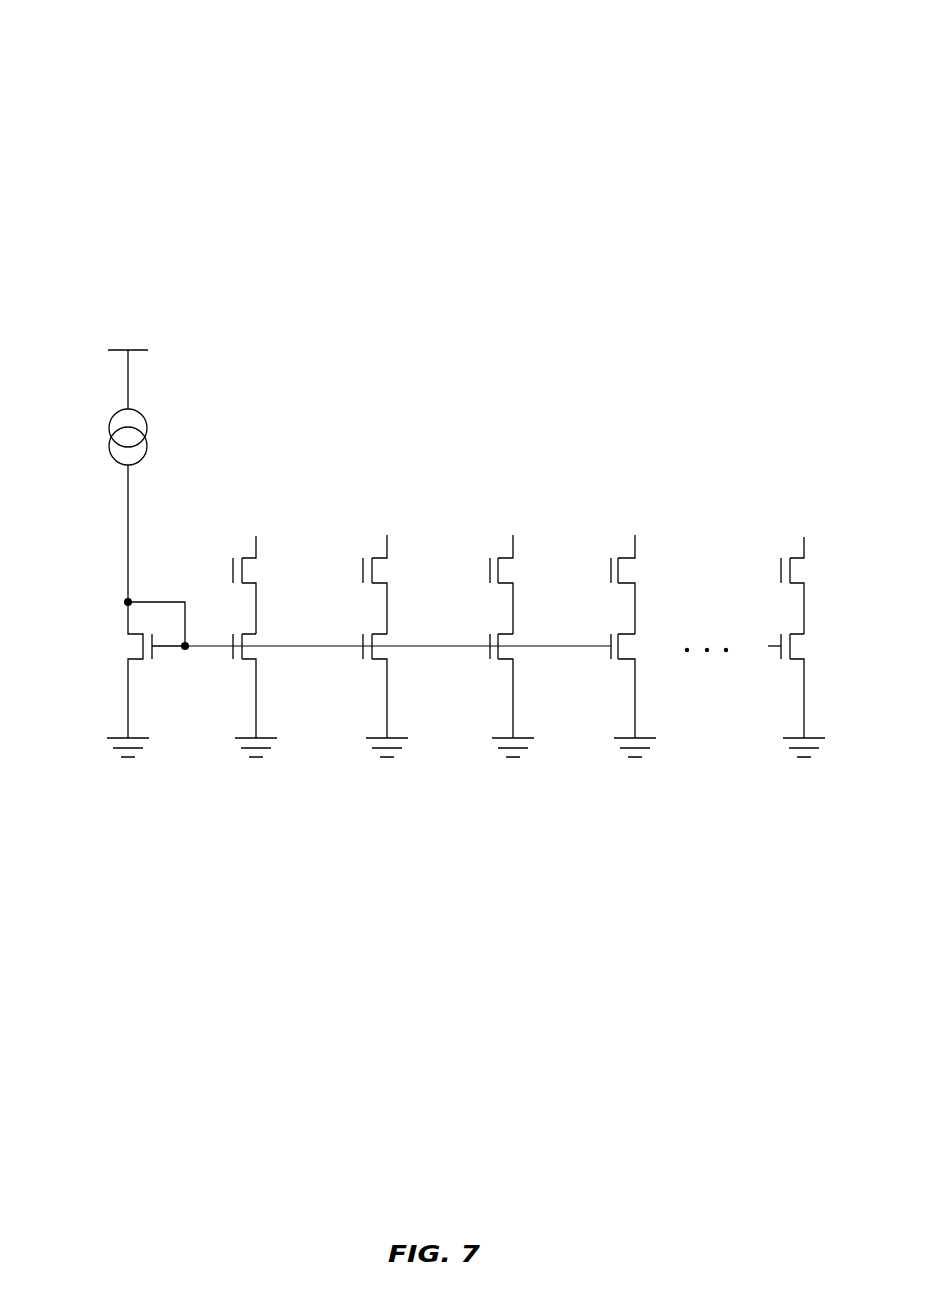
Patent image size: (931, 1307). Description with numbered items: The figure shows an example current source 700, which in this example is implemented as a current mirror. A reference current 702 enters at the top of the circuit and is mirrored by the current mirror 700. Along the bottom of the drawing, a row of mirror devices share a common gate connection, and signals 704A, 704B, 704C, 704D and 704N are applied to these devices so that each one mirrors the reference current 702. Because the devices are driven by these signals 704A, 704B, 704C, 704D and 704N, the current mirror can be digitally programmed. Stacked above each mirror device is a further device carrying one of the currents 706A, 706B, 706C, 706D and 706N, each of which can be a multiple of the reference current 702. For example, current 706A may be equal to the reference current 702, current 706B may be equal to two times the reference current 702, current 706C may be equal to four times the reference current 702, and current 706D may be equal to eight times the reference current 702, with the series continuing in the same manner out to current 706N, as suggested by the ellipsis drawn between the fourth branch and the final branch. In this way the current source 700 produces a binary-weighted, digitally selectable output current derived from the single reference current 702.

The current source 700 is at (685, 56).
The reference current 702 is at (115, 410).
The signal 704A is at (233, 572).
The signal 704B is at (363, 572).
The signal 704C is at (490, 572).
The signal 704D is at (611, 572).
The signal 704N is at (781, 572).
The current 706A is at (255, 536).
The current 706B is at (387, 535).
The current 706C is at (513, 535).
The current 706D is at (635, 535).
The current 706N is at (804, 537).